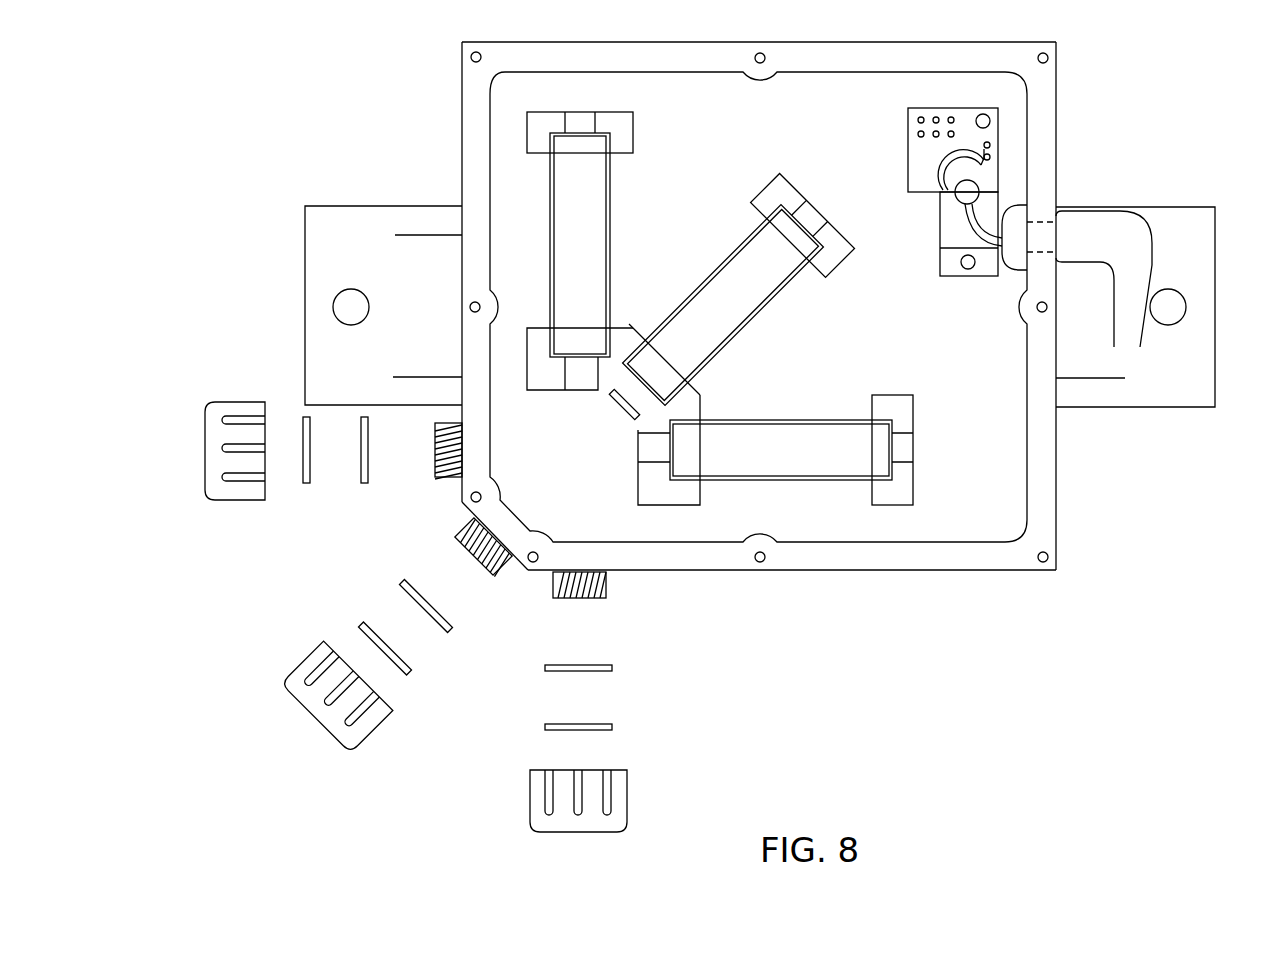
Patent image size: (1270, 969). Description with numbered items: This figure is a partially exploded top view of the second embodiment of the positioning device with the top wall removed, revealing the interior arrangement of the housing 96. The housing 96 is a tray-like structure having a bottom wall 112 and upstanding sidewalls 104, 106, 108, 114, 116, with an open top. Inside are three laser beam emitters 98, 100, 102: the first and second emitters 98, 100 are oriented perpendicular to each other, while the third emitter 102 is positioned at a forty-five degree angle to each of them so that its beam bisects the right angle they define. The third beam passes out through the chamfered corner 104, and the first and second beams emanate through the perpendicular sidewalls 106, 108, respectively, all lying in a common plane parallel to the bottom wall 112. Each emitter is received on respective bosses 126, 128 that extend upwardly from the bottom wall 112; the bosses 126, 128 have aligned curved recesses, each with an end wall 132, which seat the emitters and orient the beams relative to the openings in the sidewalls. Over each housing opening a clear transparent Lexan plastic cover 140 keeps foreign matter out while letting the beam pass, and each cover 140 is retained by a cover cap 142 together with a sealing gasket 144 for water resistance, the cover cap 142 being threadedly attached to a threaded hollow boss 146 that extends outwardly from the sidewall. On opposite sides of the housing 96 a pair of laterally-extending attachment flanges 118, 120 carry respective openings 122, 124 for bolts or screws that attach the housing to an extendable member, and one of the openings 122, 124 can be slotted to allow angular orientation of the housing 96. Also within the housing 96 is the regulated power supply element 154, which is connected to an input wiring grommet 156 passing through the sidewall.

The housing 96 is at (1058, 78).
The laser beam emitter 98 is at (809, 462).
The laser beam emitter 100 is at (600, 247).
The third laser beam emitter 102 is at (748, 310).
The chamfered corner 104 is at (468, 508).
The sidewall 106 is at (835, 572).
The sidewall 108 is at (462, 143).
The bottom wall 112 is at (820, 88).
The sidewall 114 is at (664, 53).
The sidewall 116 is at (1056, 492).
The attachment flange 118 is at (307, 345).
The attachment flange 120 is at (1215, 238).
The opening 122 is at (353, 289).
The opening 124 is at (1168, 325).
The boss 126 is at (633, 130).
The boss 128 is at (611, 392).
The end wall 132 is at (555, 370).
The cover 140 is at (306, 483).
The cover cap 142 is at (205, 440).
The sealing gasket 144 is at (365, 483).
The threaded hollow boss 146 is at (445, 477).
The regulated power supply element 154 is at (908, 176).
The input wiring grommet 156 is at (1112, 218).